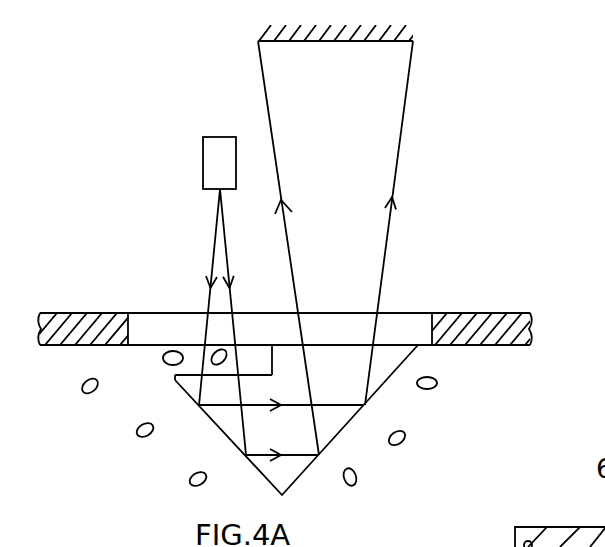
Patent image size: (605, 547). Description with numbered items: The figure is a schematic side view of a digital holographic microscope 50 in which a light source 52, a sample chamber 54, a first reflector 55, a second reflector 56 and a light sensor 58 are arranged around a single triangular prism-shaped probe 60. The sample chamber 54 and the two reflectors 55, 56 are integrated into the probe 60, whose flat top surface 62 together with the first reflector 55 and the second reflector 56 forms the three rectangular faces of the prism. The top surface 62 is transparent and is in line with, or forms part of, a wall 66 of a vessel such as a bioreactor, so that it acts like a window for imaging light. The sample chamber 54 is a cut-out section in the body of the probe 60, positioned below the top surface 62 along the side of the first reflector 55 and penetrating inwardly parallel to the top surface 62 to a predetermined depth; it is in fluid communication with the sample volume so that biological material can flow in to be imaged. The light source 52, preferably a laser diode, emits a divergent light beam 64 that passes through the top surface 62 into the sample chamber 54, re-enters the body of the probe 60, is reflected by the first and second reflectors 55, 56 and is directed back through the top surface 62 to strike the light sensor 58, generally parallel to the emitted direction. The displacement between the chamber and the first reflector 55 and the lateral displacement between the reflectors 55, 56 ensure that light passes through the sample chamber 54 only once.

The digital holographic microscope 50 is at (524, 81).
The light source 52 is at (218, 143).
The sample chamber 54 is at (192, 362).
The first reflector 55 is at (222, 432).
The second reflector 56 is at (338, 436).
The light sensor 58 is at (403, 33).
The probe 60 is at (388, 360).
The top surface 62 is at (405, 318).
The light beam 64 is at (220, 260).
The wall 66 is at (73, 317).